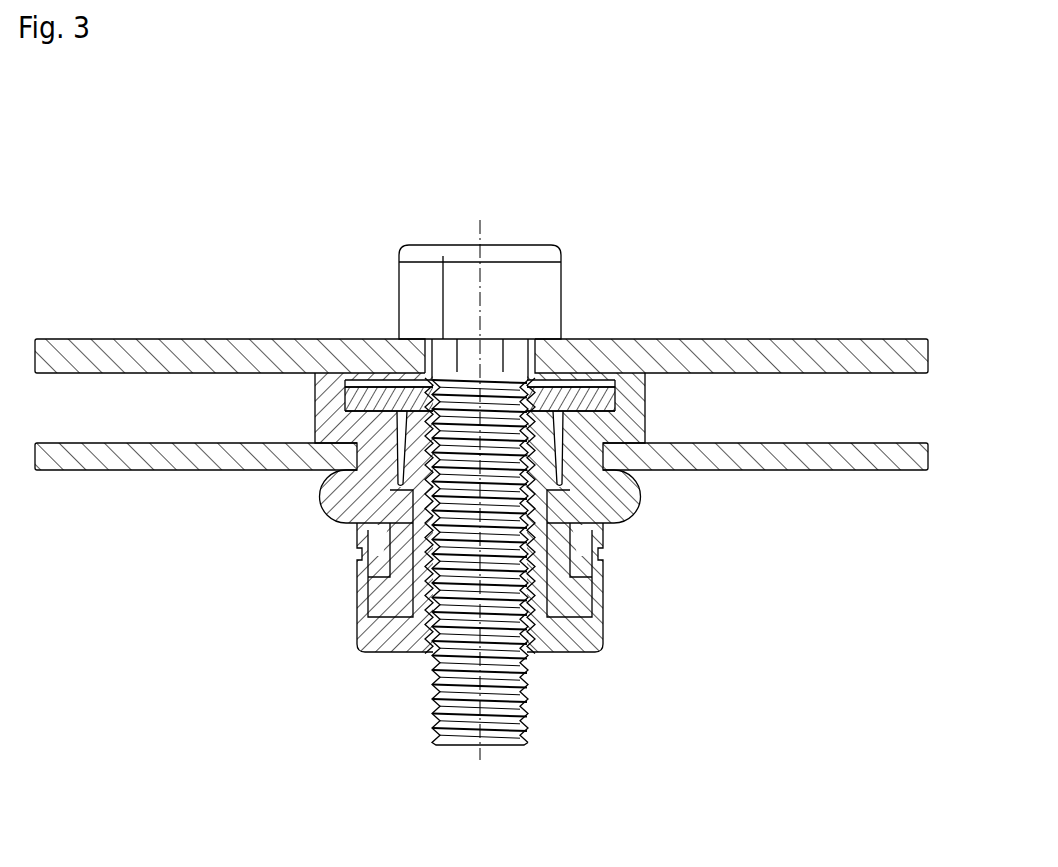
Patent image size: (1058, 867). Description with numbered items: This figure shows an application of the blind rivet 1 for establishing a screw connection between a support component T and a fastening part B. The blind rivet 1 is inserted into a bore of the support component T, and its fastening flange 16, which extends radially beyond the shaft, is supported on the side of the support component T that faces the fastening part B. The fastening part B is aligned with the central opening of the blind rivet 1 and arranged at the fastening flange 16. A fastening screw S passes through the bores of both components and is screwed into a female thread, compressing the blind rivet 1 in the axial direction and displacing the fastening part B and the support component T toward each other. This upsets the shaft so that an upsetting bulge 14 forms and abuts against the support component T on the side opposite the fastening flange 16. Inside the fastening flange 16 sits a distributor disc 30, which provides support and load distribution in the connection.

The blind rivet 1 is at (474, 513).
The upsetting bulge 14 is at (628, 513).
The fastening flange 16 is at (637, 412).
The distributor disc 30 is at (337, 398).
The fastening screw S is at (415, 282).
The fastening part B is at (780, 355).
The support component T is at (797, 467).